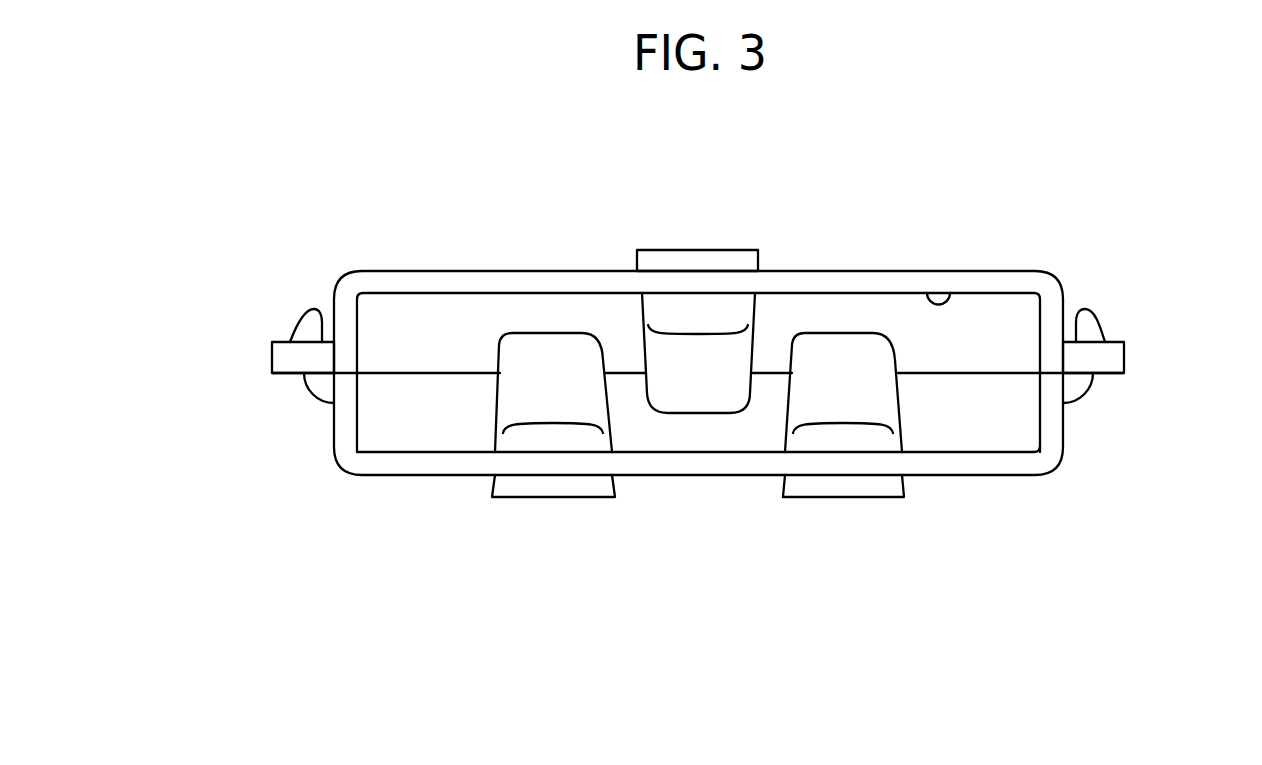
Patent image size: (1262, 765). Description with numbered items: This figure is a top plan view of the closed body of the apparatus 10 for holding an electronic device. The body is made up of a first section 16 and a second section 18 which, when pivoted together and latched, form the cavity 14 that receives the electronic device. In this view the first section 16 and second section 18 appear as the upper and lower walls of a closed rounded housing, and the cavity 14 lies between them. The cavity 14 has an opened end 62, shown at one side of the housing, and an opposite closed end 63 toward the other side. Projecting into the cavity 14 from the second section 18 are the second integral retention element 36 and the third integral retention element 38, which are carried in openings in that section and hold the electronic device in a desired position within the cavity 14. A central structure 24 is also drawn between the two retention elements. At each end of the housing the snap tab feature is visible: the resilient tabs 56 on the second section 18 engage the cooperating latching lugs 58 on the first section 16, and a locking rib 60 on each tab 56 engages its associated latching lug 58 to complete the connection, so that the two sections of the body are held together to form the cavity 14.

The apparatus 10 is at (1032, 200).
The cavity 14 is at (1007, 325).
The first section 16 is at (510, 280).
The second section 18 is at (977, 470).
The central receptacle 24 is at (698, 375).
The second integral retention element 36 is at (553, 382).
The third integral retention element 38 is at (863, 393).
The resilient tabs 56 is at (318, 386).
The latching lugs 58 is at (283, 360).
The locking rib 60 is at (300, 330).
The opened end 62 is at (950, 293).
The closed end 63 is at (423, 417).